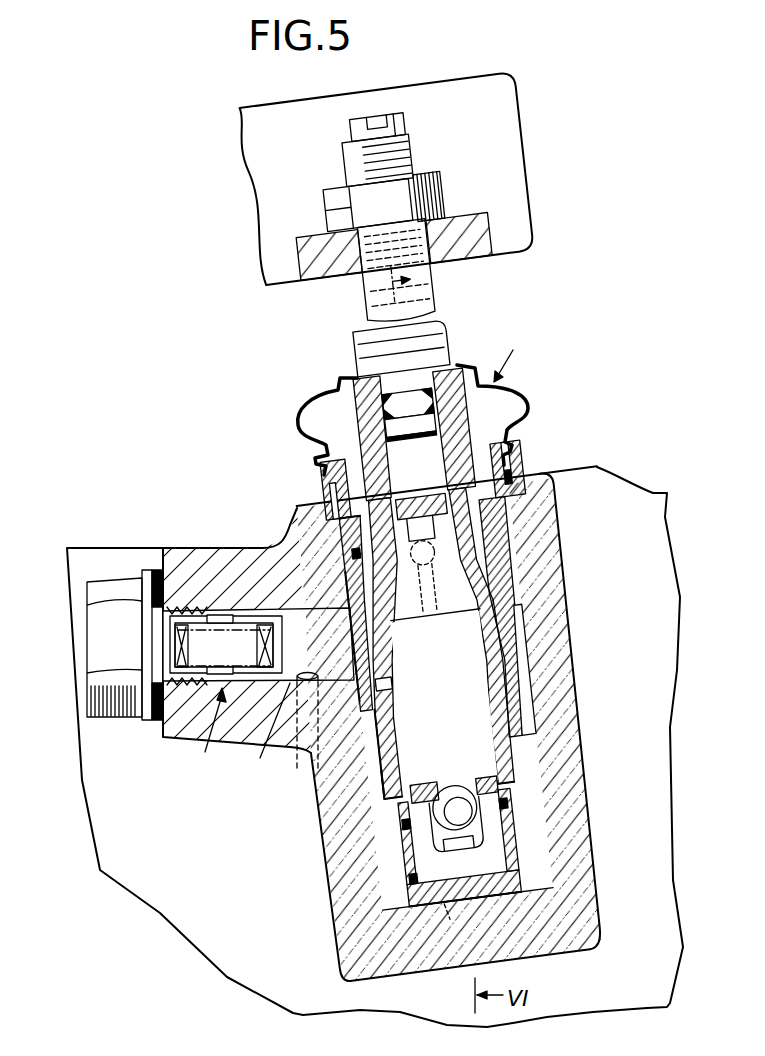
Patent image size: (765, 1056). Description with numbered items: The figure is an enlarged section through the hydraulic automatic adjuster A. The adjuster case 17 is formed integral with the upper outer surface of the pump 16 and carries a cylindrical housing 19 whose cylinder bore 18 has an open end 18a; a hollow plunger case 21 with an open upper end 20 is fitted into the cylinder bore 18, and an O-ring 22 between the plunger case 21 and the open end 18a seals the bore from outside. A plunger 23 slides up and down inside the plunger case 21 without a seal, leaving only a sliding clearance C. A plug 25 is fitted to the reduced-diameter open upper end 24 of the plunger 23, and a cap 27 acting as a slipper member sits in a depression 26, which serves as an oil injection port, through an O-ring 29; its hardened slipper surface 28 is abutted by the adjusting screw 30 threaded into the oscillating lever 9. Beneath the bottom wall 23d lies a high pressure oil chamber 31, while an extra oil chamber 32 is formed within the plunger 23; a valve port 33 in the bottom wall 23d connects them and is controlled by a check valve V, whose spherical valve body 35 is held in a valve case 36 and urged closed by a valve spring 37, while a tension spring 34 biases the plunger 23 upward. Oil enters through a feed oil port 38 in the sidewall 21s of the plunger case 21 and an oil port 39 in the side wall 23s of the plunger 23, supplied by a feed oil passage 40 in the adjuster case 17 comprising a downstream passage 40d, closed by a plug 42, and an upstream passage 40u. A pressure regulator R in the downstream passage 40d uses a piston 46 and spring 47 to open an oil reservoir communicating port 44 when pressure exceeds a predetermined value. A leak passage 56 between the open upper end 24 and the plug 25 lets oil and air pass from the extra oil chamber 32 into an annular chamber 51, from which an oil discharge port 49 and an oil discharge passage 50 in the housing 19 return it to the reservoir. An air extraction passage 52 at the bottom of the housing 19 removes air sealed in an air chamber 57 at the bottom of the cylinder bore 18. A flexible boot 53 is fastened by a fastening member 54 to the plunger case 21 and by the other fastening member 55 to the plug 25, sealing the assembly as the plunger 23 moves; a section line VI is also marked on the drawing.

The oscillating lever 9 is at (283, 277).
The pump 16 is at (670, 851).
The adjuster case 17 is at (210, 548).
The cylinder bore 18 is at (528, 728).
The open end 18a is at (330, 490).
The cylindrical housing 19 is at (567, 754).
The open upper end 20 is at (507, 452).
The plunger case 21 is at (515, 583).
The sidewall 21s is at (353, 624).
The O-ring 22 is at (337, 517).
The plunger 23 is at (474, 594).
The side wall 23s is at (396, 722).
The bottom wall 23d is at (427, 762).
The open upper end 24 is at (438, 556).
The plug 25 is at (460, 420).
The depression 26 is at (393, 437).
The cap 27 is at (449, 360).
The slipper surface 28 is at (427, 321).
The O-ring 29 is at (358, 418).
The adjusting screw 30 is at (356, 165).
The high pressure oil chamber 31 is at (497, 872).
The extra oil chamber 32 is at (447, 667).
The valve port 33 is at (452, 800).
The tension spring 34 is at (517, 850).
The spherical valve body 35 is at (445, 786).
The valve case 36 is at (462, 860).
The valve spring 37 is at (410, 833).
The feed oil port 38 is at (312, 690).
The oil port 39 is at (390, 690).
The feed oil passage 40 is at (243, 755).
The downstream passage 40d is at (268, 730).
The upstream passage 40u is at (286, 744).
The plug 42 is at (138, 702).
The oil reservoir communicating port 44 is at (257, 643).
The piston 46 is at (266, 616).
The spring 47 is at (198, 646).
The oil discharge port 49 is at (343, 556).
The oil discharge passage 50 is at (438, 582).
The annular chamber 51 is at (394, 499).
The air extraction passage 52 is at (431, 902).
The flexible boot 53 is at (524, 404).
The fastening member 54 is at (503, 441).
The other fastening member 55 is at (337, 398).
The leak passage 56 is at (494, 468).
The air chamber 57 is at (543, 887).
The hydraulic automatic adjuster A is at (509, 354).
The sliding clearance C is at (383, 784).
The pressure regulator R is at (209, 733).
The check valve V is at (452, 776).
The section line VI is at (405, 274).